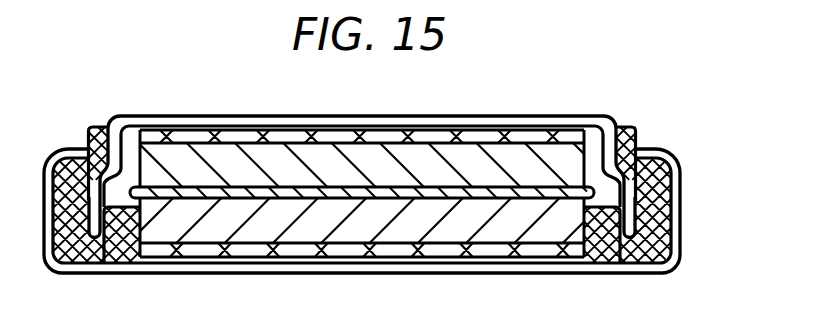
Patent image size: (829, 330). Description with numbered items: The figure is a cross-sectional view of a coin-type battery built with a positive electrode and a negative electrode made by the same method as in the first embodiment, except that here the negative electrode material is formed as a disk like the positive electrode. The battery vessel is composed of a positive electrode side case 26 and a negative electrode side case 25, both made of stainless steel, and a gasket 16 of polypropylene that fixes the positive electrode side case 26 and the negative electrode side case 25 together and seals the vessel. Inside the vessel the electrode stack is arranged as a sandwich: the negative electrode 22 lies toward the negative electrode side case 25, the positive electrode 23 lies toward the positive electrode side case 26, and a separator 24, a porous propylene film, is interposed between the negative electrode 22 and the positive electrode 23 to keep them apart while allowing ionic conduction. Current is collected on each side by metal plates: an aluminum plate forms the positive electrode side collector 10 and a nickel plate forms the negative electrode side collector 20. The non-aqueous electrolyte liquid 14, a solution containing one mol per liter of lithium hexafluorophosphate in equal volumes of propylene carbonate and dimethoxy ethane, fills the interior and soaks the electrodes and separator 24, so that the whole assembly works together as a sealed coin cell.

The positive electrode side collector 10 is at (545, 255).
The non-aqueous electrolyte liquid 14 is at (362, 195).
The gasket 16 is at (635, 135).
The negative electrode side collector 20 is at (514, 134).
The negative electrode 22 is at (397, 147).
The positive electrode 23 is at (331, 243).
The separator 24 is at (207, 188).
The negative electrode side case 25 is at (127, 123).
The positive electrode side case 26 is at (430, 267).